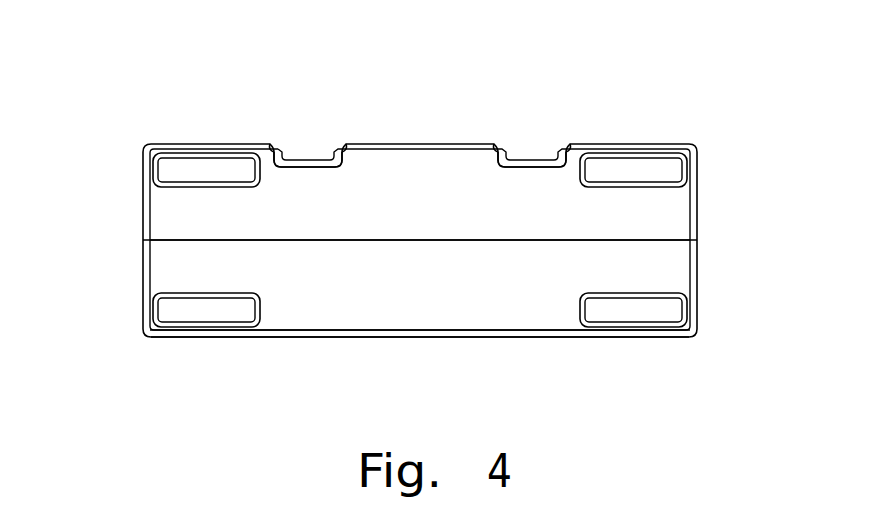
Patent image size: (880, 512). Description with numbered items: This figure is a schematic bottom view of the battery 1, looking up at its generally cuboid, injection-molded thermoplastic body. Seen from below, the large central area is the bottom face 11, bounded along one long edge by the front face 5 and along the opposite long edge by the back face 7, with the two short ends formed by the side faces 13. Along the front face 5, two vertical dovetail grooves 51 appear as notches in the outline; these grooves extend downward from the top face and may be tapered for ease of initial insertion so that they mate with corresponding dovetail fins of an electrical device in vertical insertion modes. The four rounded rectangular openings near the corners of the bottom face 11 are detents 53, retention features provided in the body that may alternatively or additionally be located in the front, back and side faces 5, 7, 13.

The battery 1 is at (420, 171).
The front face 5 is at (381, 86).
The vertical dovetail groove 51 is at (572, 86).
The back face 7 is at (420, 375).
The bottom face 11 is at (420, 326).
The side face 13 is at (419, 199).
The detent 53 is at (434, 283).